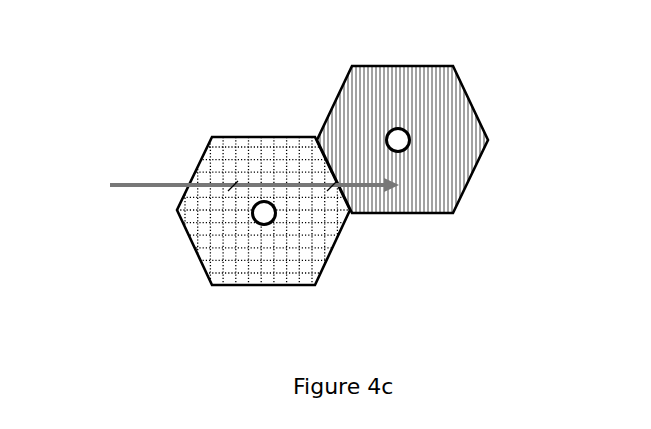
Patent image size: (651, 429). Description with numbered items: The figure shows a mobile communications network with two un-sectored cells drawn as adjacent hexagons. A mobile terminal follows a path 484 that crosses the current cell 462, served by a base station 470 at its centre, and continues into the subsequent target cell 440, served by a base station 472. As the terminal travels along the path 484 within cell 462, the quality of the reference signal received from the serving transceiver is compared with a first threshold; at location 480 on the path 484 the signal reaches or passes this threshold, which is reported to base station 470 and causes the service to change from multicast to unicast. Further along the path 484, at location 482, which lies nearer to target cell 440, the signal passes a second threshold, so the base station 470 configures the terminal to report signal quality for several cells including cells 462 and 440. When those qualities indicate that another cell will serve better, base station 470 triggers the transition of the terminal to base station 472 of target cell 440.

The target cell 440 is at (463, 92).
The cell 462 is at (188, 234).
The base station 470 is at (271, 219).
The base station 472 is at (405, 146).
The location 480 is at (233, 188).
The location 482 is at (332, 188).
The path 484 is at (170, 185).